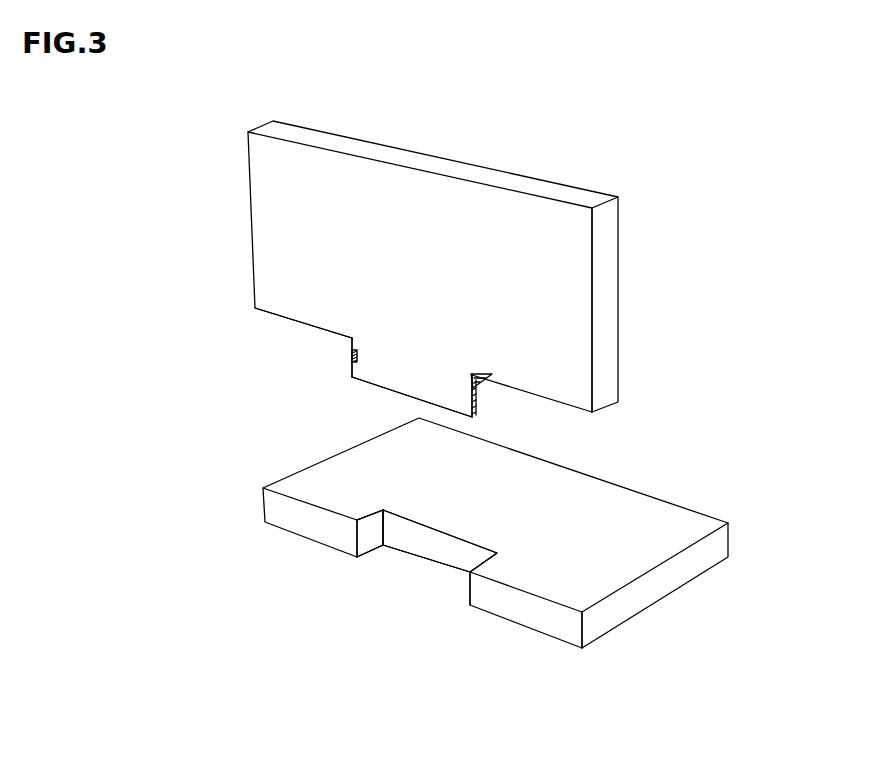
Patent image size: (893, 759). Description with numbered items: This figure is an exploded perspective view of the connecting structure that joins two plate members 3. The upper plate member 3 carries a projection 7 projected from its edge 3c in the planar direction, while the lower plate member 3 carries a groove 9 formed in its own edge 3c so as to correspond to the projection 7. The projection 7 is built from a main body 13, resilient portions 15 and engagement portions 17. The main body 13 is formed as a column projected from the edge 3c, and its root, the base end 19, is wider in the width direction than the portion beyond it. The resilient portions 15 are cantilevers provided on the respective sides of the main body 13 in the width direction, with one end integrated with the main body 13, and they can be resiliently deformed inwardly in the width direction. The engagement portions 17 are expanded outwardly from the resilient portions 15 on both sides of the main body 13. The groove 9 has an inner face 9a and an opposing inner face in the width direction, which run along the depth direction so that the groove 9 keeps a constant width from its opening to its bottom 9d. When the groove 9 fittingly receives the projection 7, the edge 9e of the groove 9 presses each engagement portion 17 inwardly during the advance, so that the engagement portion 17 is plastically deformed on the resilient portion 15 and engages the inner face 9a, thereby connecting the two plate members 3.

The plate member 3 is at (541, 184).
The edge of plate member 3c is at (567, 407).
The projection 7 is at (380, 375).
The groove 9 is at (430, 547).
The inner face of groove 9a is at (363, 538).
The bottom of groove 9d is at (458, 562).
The edge of groove 9e is at (368, 554).
The main body 13 is at (411, 372).
The resilient portion 15 is at (348, 366).
The engagement portion 17 is at (348, 357).
The base end 19 is at (348, 340).